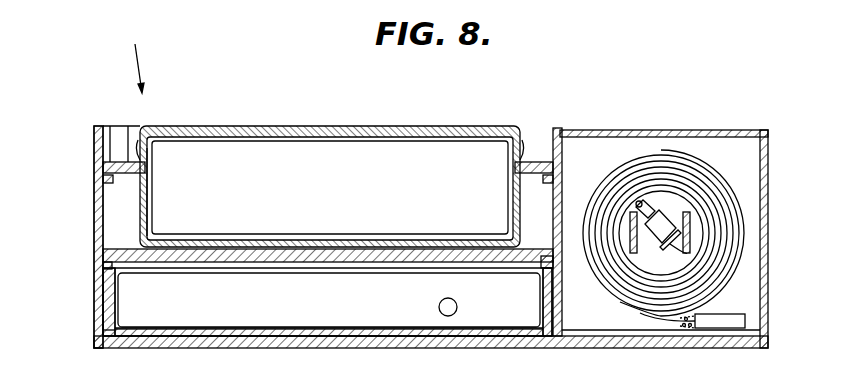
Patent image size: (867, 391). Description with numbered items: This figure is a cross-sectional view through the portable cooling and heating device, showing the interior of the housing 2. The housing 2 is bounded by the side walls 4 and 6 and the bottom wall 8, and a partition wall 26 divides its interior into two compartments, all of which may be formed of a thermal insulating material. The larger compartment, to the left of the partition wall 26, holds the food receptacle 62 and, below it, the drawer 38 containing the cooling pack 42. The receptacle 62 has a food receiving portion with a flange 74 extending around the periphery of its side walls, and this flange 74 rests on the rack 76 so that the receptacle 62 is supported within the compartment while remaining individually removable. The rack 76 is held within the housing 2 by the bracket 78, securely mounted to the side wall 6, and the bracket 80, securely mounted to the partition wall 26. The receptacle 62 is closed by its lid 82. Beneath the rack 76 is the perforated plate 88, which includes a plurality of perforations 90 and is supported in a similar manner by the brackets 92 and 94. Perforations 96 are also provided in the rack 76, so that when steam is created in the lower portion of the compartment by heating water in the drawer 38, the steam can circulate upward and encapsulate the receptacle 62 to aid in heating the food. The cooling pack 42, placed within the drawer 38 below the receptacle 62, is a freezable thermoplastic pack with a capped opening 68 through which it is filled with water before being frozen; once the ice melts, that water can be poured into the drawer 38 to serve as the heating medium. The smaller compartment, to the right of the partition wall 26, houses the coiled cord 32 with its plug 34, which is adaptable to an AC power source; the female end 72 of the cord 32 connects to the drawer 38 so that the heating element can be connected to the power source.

The housing 2 is at (94, 182).
The side wall 4 is at (766, 224).
The side wall 6 is at (94, 219).
The bottom wall 8 is at (216, 348).
The partition wall 26 is at (553, 150).
The cord 32 is at (696, 166).
The plug 34 is at (648, 203).
The drawer 38 is at (108, 338).
The cooling pack 42 is at (116, 291).
The receptacle 62 is at (338, 196).
The capped opening 68 is at (446, 316).
The female end of the cord 72 is at (730, 316).
The flange 74 is at (140, 152).
The rack 76 is at (111, 152).
The bracket 78 is at (109, 181).
The bracket 80 is at (553, 181).
The lid 82 is at (300, 126).
The perforated plate 88 is at (150, 240).
The perforations 90 is at (126, 256).
The bracket 92 is at (103, 264).
The bracket 94 is at (553, 275).
The perforations 96 is at (129, 158).